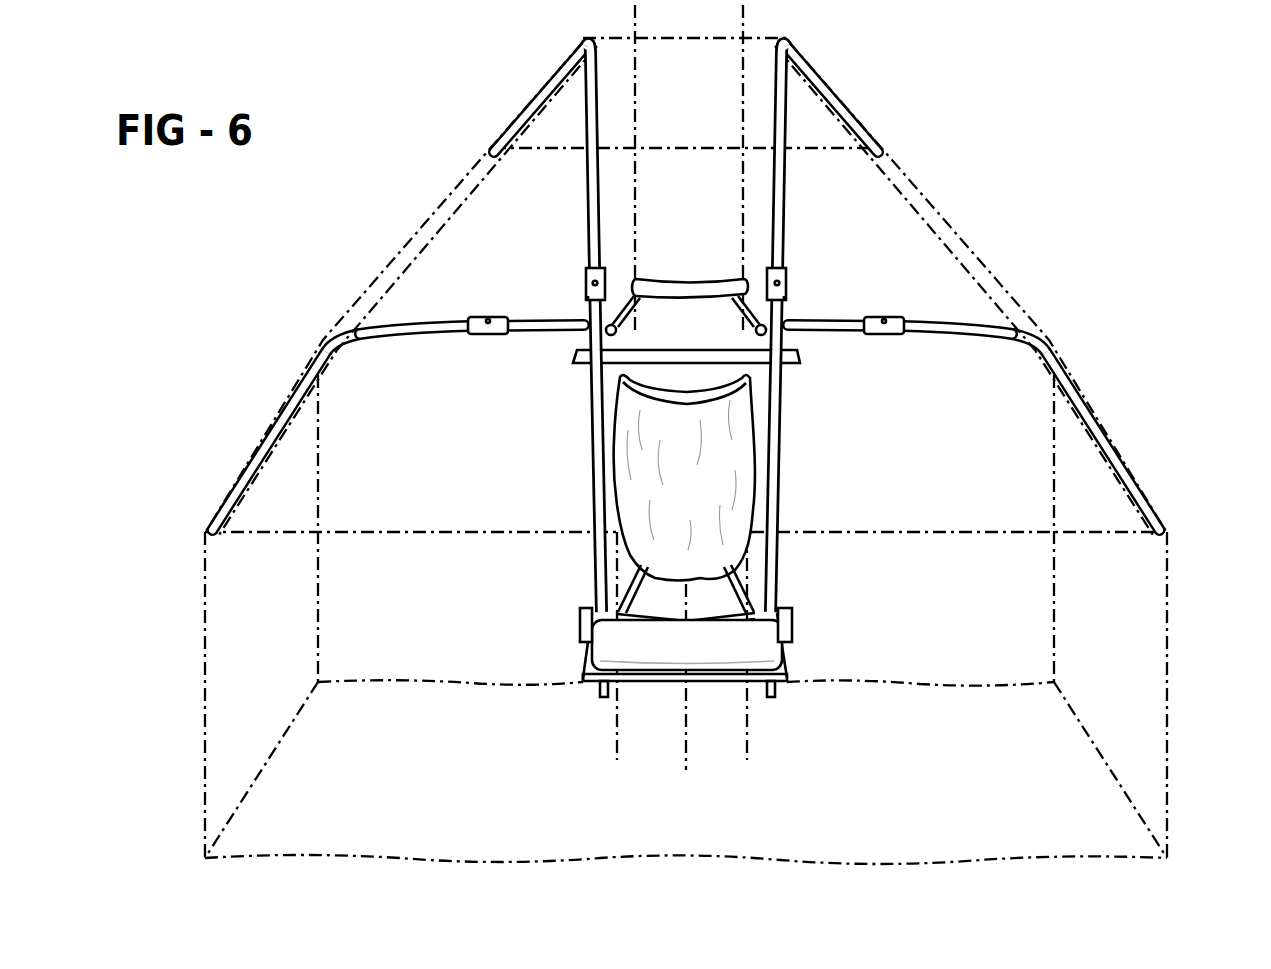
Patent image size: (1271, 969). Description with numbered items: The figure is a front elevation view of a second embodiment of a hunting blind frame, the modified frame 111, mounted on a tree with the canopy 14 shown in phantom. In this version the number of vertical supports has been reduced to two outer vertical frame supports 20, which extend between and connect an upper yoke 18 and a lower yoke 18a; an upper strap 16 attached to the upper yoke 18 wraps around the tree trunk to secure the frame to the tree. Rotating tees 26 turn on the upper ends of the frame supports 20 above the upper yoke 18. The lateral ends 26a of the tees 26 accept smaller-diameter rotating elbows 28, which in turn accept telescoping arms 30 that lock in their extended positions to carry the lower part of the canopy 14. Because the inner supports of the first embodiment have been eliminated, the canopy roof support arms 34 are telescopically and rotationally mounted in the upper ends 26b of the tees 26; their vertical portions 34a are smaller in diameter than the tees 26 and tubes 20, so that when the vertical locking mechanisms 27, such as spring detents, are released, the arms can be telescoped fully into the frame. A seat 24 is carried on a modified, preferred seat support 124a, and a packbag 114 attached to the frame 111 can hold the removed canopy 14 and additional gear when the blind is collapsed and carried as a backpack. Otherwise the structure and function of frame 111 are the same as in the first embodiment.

The fabric covering 14 is at (1168, 578).
The upper strap 16 is at (630, 302).
The upper bracing member or yoke 18 is at (613, 355).
The lower bracing member or yoke 18a is at (787, 630).
The outer vertical frame support 20 is at (600, 455).
The seat 24 is at (706, 648).
The rotating tee 26 is at (583, 337).
The lateral end of rotating tee 26a is at (508, 321).
The upper end of rotating tee 26b is at (593, 297).
The vertical locking mechanism 27 is at (590, 283).
The rotating elbow 28 is at (380, 330).
The telescoping arm 30 is at (238, 488).
The canopy roof support arm 34 is at (583, 38).
The vertical portion of support arm 34a is at (590, 110).
The modified frame 111 is at (864, 274).
The packbag 114 is at (740, 477).
The seat support 124a is at (590, 680).